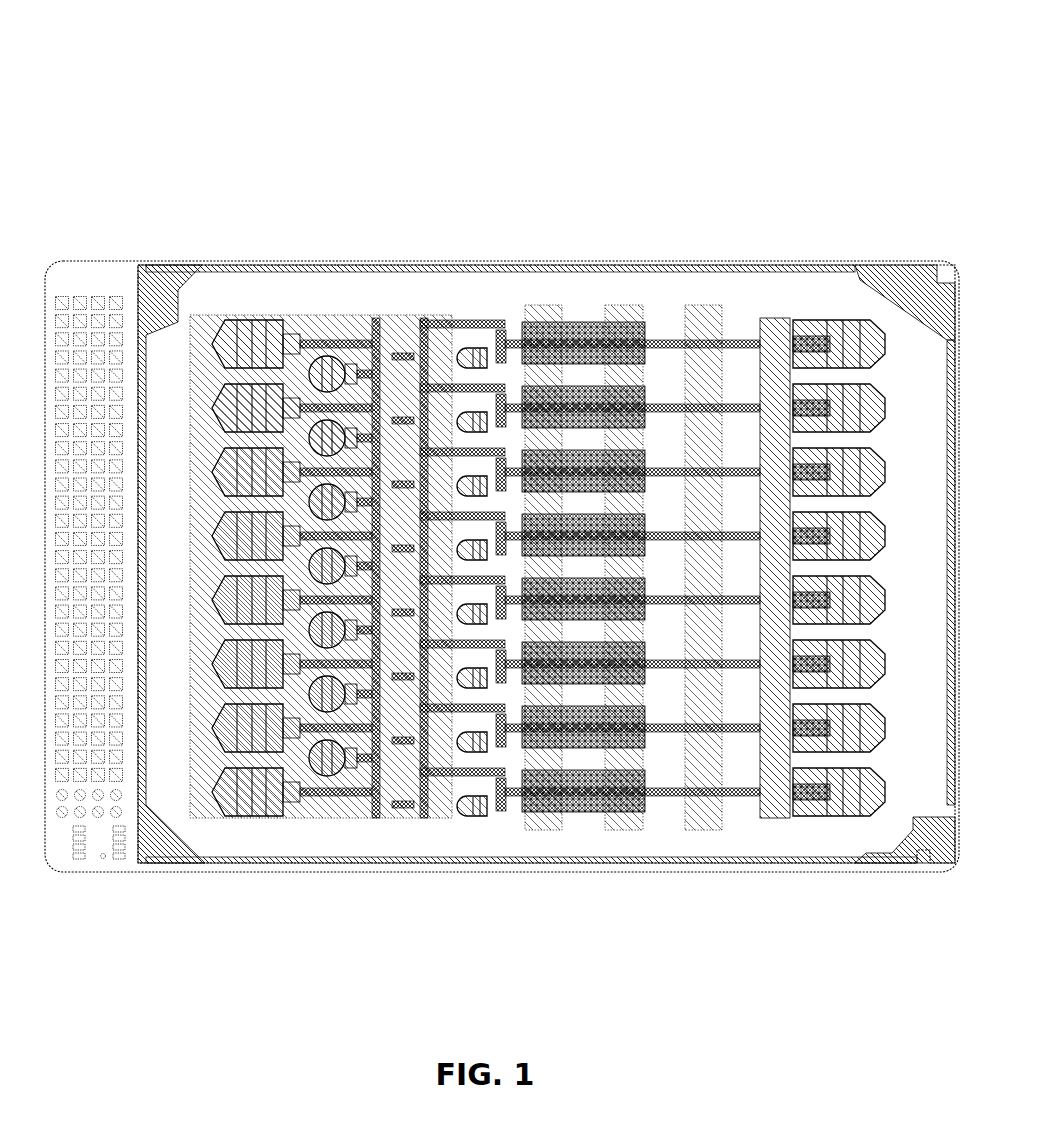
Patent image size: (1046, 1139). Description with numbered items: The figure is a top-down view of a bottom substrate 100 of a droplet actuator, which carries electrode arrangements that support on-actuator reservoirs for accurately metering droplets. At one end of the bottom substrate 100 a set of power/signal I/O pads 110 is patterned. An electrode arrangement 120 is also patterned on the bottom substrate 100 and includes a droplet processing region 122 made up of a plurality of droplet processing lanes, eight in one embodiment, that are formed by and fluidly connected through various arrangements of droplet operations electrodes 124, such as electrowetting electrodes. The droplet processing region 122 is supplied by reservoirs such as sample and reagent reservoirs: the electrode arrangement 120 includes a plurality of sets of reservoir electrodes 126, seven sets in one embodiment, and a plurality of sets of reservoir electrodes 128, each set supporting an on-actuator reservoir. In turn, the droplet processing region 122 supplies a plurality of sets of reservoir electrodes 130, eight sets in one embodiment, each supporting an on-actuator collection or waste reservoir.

The bottom substrate 100 is at (500, 471).
The power/signal I/O pads 110 is at (100, 290).
The electrode arrangement 120 is at (677, 292).
The droplet processing region 122 is at (546, 566).
The droplet operations electrodes 124 is at (405, 325).
The reservoir electrodes 126 is at (212, 472).
The reservoir electrodes 128 is at (310, 500).
The reservoir electrodes 130 is at (885, 344).